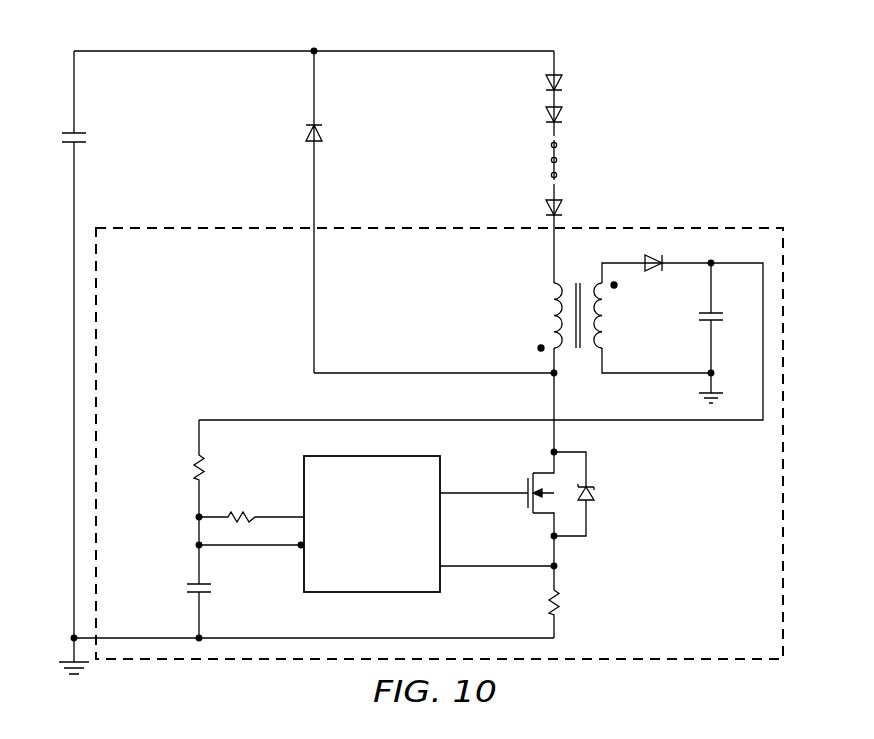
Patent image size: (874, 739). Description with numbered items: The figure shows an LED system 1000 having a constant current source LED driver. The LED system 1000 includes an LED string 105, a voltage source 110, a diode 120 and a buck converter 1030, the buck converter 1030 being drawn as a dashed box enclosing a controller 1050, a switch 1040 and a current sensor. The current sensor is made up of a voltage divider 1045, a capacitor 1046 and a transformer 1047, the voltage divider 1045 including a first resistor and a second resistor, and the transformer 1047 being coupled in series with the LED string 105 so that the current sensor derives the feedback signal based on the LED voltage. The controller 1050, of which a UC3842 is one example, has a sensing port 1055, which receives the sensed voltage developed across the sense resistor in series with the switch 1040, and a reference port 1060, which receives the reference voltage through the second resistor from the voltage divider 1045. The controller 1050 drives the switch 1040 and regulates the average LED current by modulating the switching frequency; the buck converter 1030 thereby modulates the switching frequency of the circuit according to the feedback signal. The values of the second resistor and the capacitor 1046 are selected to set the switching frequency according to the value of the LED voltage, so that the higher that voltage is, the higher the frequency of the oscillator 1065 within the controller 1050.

The LED system 1000 is at (709, 72).
The LED string 105 is at (581, 111).
The voltage source 110 is at (88, 137).
The diode 120 is at (305, 131).
The buck converter 1030 is at (667, 226).
The transformer 1047 is at (563, 311).
The voltage divider 1045 is at (188, 512).
The capacitor 1046 is at (188, 590).
The reference port 1060 is at (302, 512).
The oscillator 1065 is at (347, 546).
The controller 1050 is at (441, 470).
The switch 1040 is at (592, 494).
The sensing port 1055 is at (559, 570).